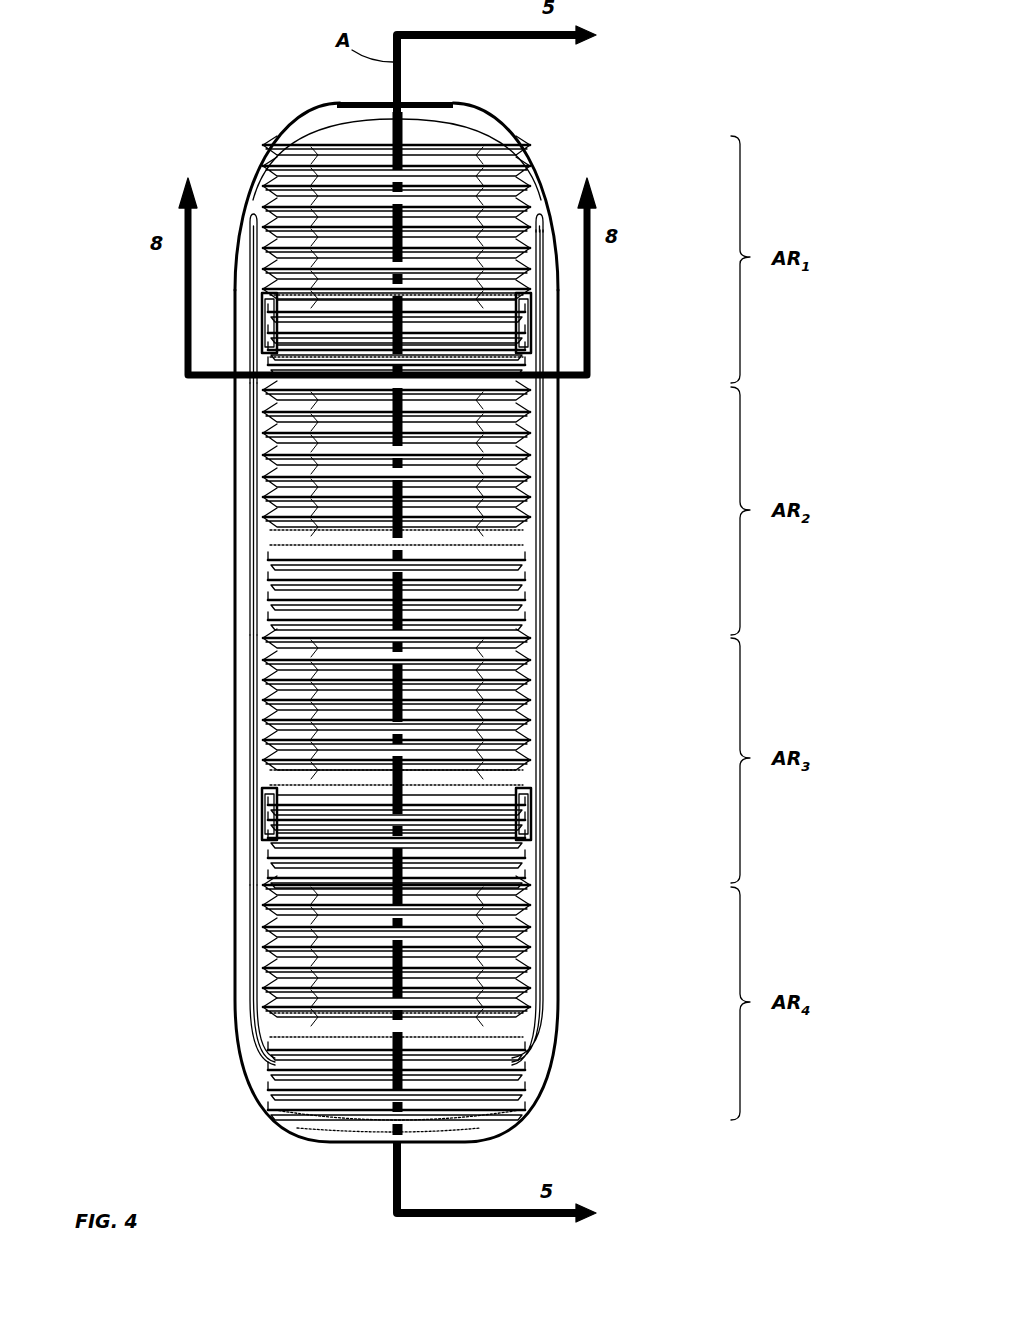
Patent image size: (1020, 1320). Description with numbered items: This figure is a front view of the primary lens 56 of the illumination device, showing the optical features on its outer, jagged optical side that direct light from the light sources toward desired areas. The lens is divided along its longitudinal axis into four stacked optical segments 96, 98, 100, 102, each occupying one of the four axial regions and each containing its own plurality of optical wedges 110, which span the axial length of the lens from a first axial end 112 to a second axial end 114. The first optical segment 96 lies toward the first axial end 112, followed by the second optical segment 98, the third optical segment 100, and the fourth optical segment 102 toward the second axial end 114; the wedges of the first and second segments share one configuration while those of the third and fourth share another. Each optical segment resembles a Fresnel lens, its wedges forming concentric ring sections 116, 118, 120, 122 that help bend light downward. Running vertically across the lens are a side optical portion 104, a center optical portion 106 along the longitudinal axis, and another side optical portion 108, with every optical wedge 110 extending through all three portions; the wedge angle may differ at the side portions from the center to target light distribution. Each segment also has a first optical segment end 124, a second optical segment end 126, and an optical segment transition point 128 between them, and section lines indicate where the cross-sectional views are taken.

The primary lens 56 is at (108, 152).
The first optical segment 96 is at (262, 203).
The second optical segment 98 is at (265, 440).
The third optical segment 100 is at (268, 668).
The fourth optical segment 102 is at (268, 958).
The side optical portion 104 is at (296, 150).
The center optical portion 106 is at (373, 152).
The side optical portion 108 is at (495, 145).
The optical wedges 110 is at (523, 205).
The first axial end 112 is at (440, 142).
The second axial end 114 is at (303, 1128).
The concentric ring section 116 is at (547, 200).
The concentric ring section 118 is at (520, 530).
The concentric ring section 120 is at (520, 770).
The concentric ring section 122 is at (520, 1035).
The first optical segment end 124 is at (270, 146).
The second optical segment end 126 is at (510, 393).
The optical segment transition point 128 is at (262, 310).